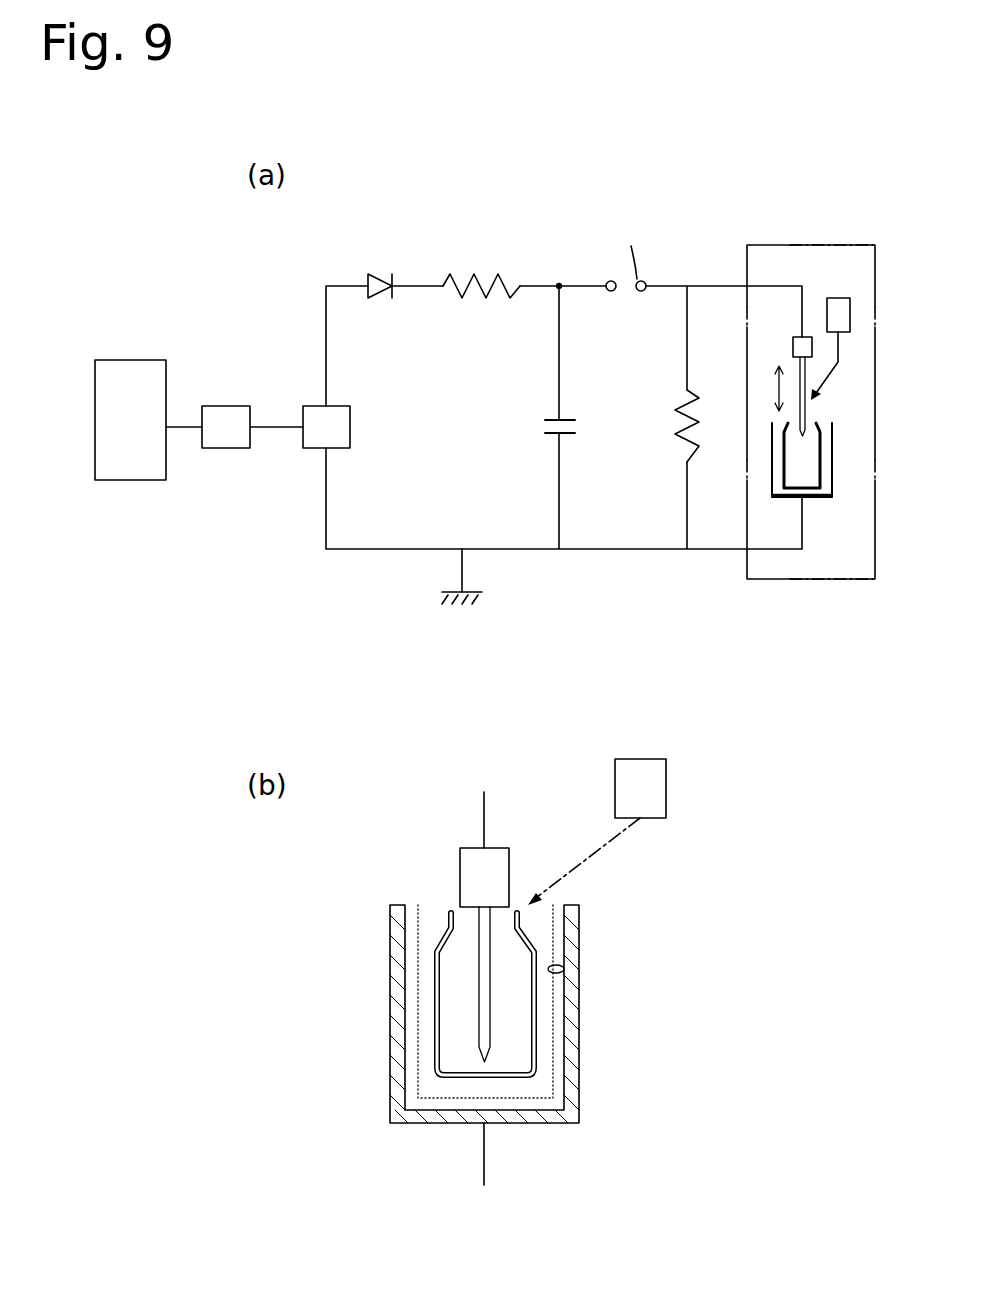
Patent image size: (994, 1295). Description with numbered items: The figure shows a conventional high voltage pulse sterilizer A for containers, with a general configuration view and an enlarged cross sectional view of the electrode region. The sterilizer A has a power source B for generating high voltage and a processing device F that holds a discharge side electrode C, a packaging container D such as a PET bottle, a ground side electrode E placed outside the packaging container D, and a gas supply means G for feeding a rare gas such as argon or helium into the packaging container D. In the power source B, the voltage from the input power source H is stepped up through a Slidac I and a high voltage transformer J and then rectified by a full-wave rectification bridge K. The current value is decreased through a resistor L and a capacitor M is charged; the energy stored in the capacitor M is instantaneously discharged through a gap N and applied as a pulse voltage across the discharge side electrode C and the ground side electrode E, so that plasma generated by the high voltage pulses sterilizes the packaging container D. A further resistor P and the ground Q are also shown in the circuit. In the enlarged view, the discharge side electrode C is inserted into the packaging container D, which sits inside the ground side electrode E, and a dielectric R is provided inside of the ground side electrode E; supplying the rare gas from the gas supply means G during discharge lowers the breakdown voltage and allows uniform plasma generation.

The power source H is at (138, 360).
The Slidac I is at (229, 406).
The high voltage transformer J is at (350, 420).
The full-wave rectification bridge K is at (384, 274).
The resistor L is at (478, 274).
The power source B is at (557, 282).
The gap N is at (631, 274).
The capacitor M is at (546, 425).
The resistor P is at (686, 418).
The ground Q is at (462, 570).
The sterilizer A is at (714, 276).
The processing device F is at (822, 245).
The gas supply means G is at (840, 298).
The discharge side electrode C is at (800, 385).
The packaging container D is at (821, 432).
The ground side electrode E is at (832, 467).
The dielectric R is at (560, 970).